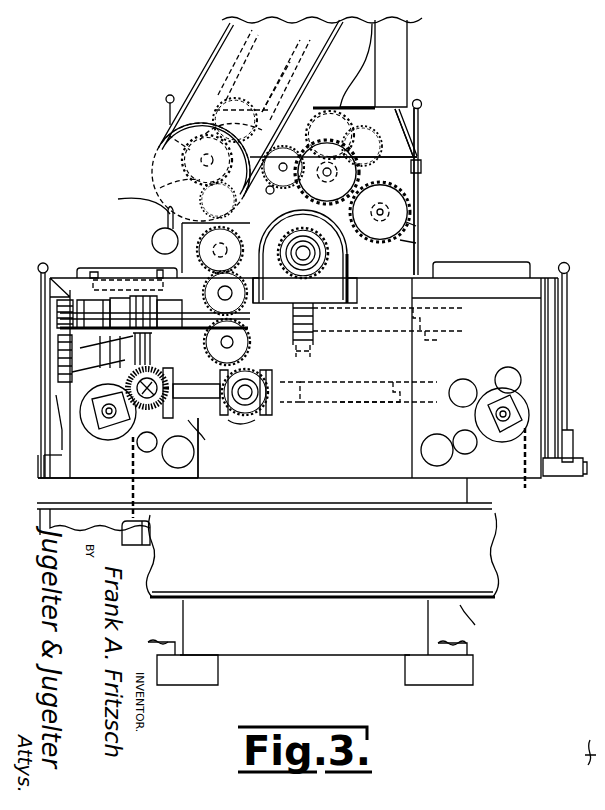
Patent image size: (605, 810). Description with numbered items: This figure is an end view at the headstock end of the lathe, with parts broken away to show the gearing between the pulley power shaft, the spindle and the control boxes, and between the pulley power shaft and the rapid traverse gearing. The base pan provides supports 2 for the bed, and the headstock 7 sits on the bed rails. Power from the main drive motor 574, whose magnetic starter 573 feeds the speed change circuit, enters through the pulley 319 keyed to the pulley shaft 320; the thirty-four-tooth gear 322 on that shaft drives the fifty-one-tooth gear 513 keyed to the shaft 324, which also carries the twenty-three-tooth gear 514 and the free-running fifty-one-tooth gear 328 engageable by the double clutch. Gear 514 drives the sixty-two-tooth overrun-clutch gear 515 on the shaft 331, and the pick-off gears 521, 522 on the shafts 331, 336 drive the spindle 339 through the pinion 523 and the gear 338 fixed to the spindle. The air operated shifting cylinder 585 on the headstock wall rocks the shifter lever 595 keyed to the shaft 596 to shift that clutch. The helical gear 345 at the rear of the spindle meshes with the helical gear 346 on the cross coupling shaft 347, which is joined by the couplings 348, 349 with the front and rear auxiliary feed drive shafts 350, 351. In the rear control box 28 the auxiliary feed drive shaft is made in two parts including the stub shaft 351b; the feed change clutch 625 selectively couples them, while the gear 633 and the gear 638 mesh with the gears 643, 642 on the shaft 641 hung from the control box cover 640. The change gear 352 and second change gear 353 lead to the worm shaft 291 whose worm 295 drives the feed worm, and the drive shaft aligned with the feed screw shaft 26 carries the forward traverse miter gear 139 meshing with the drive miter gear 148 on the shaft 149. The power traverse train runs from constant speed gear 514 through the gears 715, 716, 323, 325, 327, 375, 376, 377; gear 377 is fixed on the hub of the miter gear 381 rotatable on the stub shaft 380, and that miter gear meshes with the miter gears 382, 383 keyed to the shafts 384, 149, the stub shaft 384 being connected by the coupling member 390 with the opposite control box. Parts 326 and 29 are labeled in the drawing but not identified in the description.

The main drive motor 574 is at (236, 62).
The magnetic starter 573 is at (410, 71).
The pulley 319 is at (168, 135).
The shaft 324 is at (265, 112).
The gear 322 is at (235, 120).
The gear 513 is at (312, 132).
The gear 515 is at (352, 134).
The shaft 331 is at (358, 144).
The pulley shaft 320 is at (204, 158).
The gear 514 is at (276, 159).
The pick-off gear 521 is at (362, 171).
The headstock 7 is at (404, 182).
The gear 323 is at (160, 160).
The shaft 596 is at (158, 186).
The shifter lever 595 is at (127, 201).
The air operated shifting cylinder 585 is at (152, 238).
The gear 328 is at (167, 219).
The gear 327 is at (241, 215).
The gear 716 is at (296, 232).
The gear 715 is at (306, 232).
The shaft 336 is at (412, 209).
The pick-off gear 522 is at (416, 226).
The pinion 523 is at (416, 243).
The control box cover 640 is at (88, 268).
The gear 643 is at (93, 270).
The shaft 641 is at (127, 280).
The gear 642 is at (159, 272).
The gear 633 is at (40, 273).
The spindle 339 is at (310, 255).
The stub shaft 351b is at (75, 312).
The auxiliary feed drive shaft 351 is at (176, 309).
The gear 638 is at (133, 307).
The gear 326 is at (225, 292).
The gear 325 is at (271, 290).
The helical gear 345 is at (324, 311).
The gear 338 is at (362, 286).
The coupling 348 is at (424, 300).
The spur gear 352 is at (57, 328).
The gear 375 is at (170, 319).
The helical gear 346 is at (318, 326).
The change gear 353 is at (58, 358).
The coupling 349 is at (165, 349).
The gear 376 is at (252, 345).
The cross coupling shaft 347 is at (365, 332).
The auxiliary feed drive shaft 350 is at (440, 335).
The stub shaft 380 is at (258, 378).
The feed change clutch 625 is at (56, 395).
The worm shaft 291 is at (60, 425).
The worm 295 is at (46, 448).
The bevel gear 29 is at (124, 393).
The forward traverse miter gear 139 is at (135, 440).
The drive miter gear 148 is at (178, 452).
The shaft 149 is at (405, 412).
The stub shaft 384 is at (290, 405).
The miter gear 382 is at (258, 418).
The coupling member 390 is at (365, 405).
The gear 377 is at (238, 424).
The miter gear 381 is at (270, 415).
The miter gear 383 is at (215, 430).
The rear control box 28 is at (84, 477).
The supports 2 is at (472, 492).
The feed screw shaft 26 is at (586, 762).